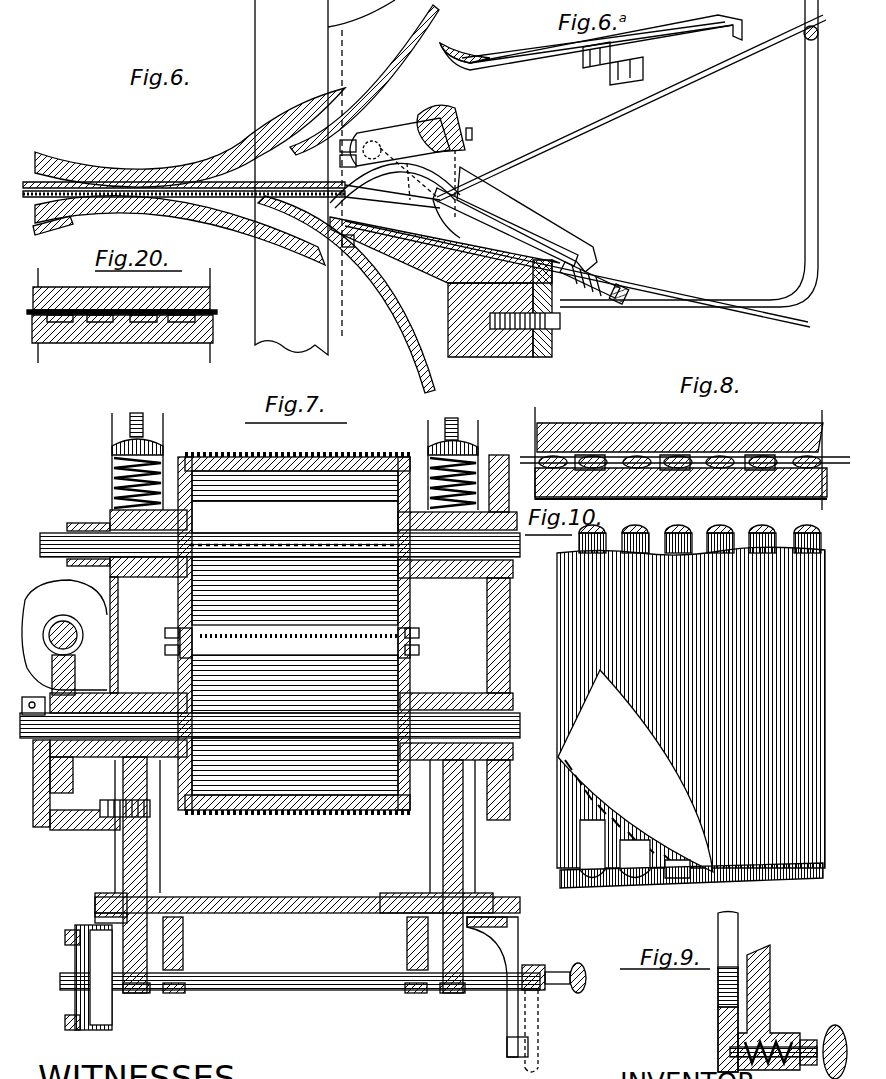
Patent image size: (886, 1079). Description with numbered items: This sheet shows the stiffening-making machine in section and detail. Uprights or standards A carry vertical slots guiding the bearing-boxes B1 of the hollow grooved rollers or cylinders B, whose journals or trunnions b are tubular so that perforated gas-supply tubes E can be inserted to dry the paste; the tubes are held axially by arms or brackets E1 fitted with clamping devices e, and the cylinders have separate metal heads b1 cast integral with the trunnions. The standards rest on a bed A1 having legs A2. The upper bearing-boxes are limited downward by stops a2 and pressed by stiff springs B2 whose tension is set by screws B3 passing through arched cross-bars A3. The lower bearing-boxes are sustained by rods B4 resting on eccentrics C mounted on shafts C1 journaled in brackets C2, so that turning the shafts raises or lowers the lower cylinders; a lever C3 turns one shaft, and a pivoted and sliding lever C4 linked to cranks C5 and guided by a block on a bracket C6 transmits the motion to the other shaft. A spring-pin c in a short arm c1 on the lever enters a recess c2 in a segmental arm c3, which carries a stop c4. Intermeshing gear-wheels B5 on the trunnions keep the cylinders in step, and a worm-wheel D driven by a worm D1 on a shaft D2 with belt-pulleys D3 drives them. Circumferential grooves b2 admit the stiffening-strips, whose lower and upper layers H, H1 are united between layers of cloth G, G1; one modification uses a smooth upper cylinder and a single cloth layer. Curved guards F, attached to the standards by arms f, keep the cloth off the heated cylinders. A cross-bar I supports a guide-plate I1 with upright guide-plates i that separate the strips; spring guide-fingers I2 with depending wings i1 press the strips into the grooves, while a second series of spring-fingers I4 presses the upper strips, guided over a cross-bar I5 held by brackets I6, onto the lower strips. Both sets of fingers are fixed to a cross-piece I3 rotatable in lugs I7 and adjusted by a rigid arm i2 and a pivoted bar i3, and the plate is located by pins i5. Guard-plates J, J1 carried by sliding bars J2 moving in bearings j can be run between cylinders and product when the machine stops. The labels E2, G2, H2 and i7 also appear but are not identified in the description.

In FIG. 6, the uprights or standards A is at (325, 177).
In FIG. 7, the uprights or standards A is at (117, 870).
In FIG. 7, the bed A1 is at (326, 900).
In FIG. 7, the legs A2 is at (495, 920).
In FIG. 7, the arched cross-bars A3 is at (113, 475).
In FIG. 6, the rollers or cylinders B is at (157, 178).
In FIG. 20, the rollers or cylinders B is at (60, 288).
In FIG. 7, the rollers or cylinders B is at (445, 430).
In FIG. 8, the rollers or cylinders B is at (760, 424).
In FIG. 7, the bearing-boxes B1 is at (283, 637).
In FIG. 7, the stiff springs B2 is at (165, 460).
In FIG. 7, the screws B3 is at (145, 425).
In FIG. 7, the rods B4 is at (147, 870).
In FIG. 7, the gear-wheels B5 is at (505, 612).
In FIG. 7, the journals or trunnions b is at (299, 635).
In FIG. 7, the metal heads b1 is at (295, 633).
In FIG. 6, the circumferential grooves or depressions b2 is at (210, 194).
In FIG. 20, the circumferential grooves or depressions b2 is at (100, 323).
In FIG. 7, the circumferential grooves or depressions b2 is at (290, 462).
In FIG. 8, the circumferential grooves or depressions b2 is at (580, 455).
In FIG. 7, the eccentrics C is at (160, 945).
In FIG. 7, the shafts C1 is at (307, 974).
In FIG. 7, the brackets C2 is at (407, 944).
In FIG. 7, the lever C3 is at (530, 965).
In FIG. 9, the lever C3 is at (770, 960).
In FIG. 7, the pivoted and sliding lever C4 is at (75, 1000).
In FIG. 7, the cranks C5 is at (100, 957).
In FIG. 7, the bracket C6 is at (100, 918).
In FIG. 7, the spring-pin c is at (576, 964).
In FIG. 9, the spring-pin c is at (806, 1040).
In FIG. 7, the short arm c1 is at (554, 966).
In FIG. 9, the short arm c1 is at (780, 1040).
In FIG. 9, the recess c2 is at (730, 1052).
In FIG. 7, the segmental arm c3 is at (512, 966).
In FIG. 9, the segmental arm c3 is at (728, 930).
In FIG. 7, the projection or stop c4 is at (528, 1050).
In FIG. 7, the worm-wheel D is at (64, 638).
In FIG. 7, the worm D1 is at (68, 620).
In FIG. 7, the horizontally-arranged shaft D2 is at (58, 622).
In FIG. 7, the belt-pulleys D3 is at (75, 635).
In FIG. 7, the gas-supply tubes E is at (60, 540).
In FIG. 7, the arms or brackets E1 is at (90, 524).
In FIG. 7, the bracket E2 is at (98, 808).
In FIG. 7, the clamping devices e is at (32, 695).
In FIG. 6, the curved guides or guards F is at (418, 38).
In FIG. 6, the brackets or arms f is at (355, 178).
In FIG. 6, the layer of cloth G is at (60, 182).
In FIG. 8, the layer of cloth G is at (830, 457).
In FIG. 10, the layer of cloth G is at (691, 709).
In FIG. 6, the lower layer of cloth G1 is at (400, 300).
In FIG. 8, the lower layer of cloth G1 is at (827, 466).
In FIG. 10, the lower layer of cloth G1 is at (615, 886).
In FIG. 20, the guide strip G2 is at (27, 310).
In FIG. 6, the lower layers of stiffening-strips H is at (660, 287).
In FIG. 8, the lower layers of stiffening-strips H is at (625, 470).
In FIG. 10, the lower layers of stiffening-strips H is at (632, 532).
In FIG. 6, the upper layers of stiffening-strips H1 is at (562, 136).
In FIG. 10, the upper layers of stiffening-strips H1 is at (600, 534).
In FIG. 20, the rod bearing H2 is at (55, 323).
In FIG. 8, the rod bearing H2 is at (636, 455).
In FIG. 6, the rigid horizontal cross-bar I is at (450, 325).
In FIG. 6, the guide-plate I1 is at (415, 260).
In FIG. 6, the spring guide-fingers I2 is at (302, 195).
In FIG. 6A, the spring guide-fingers I2 is at (522, 55).
In FIG. 6, the cross-piece I3 is at (462, 112).
In FIG. 6, the second series of spring-fingers I4 is at (366, 205).
In FIG. 6, the cross-bar I5 is at (805, 38).
In FIG. 6, the arms or brackets I6 is at (808, 130).
In FIG. 6, the lugs I7 is at (450, 222).
In FIG. 6, the upwardly-projecting guide-plates i is at (436, 219).
In FIG. 6, the depending flanges or wings i1 is at (300, 204).
In FIG. 6, the rigid arm i2 is at (400, 159).
In FIG. 6A, the rigid arm i2 is at (613, 63).
In FIG. 6, the bar i3 is at (512, 215).
In FIG. 6, the pins i5 is at (560, 326).
In FIG. 6, the bolt i7 is at (598, 278).
In FIG. 7, the horizontal guard-plates J is at (290, 622).
In FIG. 7, the lower guard-plate J1 is at (294, 655).
In FIG. 7, the horizontally-sliding bars J2 is at (294, 639).
In FIG. 7, the bearings j is at (321, 647).
In FIG. 7, the stops a2 is at (515, 630).